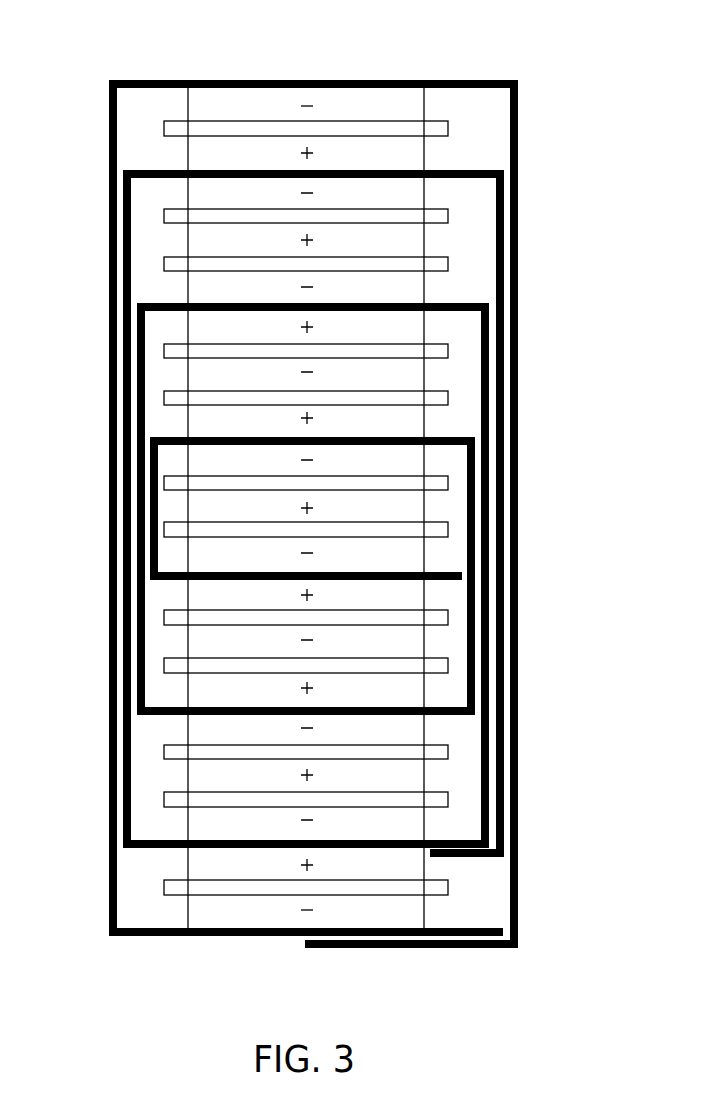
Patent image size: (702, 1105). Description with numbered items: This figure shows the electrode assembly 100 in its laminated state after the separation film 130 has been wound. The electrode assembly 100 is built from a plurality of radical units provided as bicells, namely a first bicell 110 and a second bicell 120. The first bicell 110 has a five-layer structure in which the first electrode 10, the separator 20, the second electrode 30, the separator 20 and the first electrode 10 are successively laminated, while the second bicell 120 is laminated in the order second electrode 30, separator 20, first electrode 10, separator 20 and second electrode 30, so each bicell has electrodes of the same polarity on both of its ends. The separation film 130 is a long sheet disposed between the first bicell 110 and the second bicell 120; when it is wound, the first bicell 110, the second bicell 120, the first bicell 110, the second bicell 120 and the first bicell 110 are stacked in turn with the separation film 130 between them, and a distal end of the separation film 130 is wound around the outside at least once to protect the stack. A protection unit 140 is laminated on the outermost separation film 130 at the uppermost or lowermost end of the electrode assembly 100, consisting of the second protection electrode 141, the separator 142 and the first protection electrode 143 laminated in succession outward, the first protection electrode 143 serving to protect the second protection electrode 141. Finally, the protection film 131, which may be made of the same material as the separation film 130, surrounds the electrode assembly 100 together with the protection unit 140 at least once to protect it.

The electrode assembly 100 is at (96, 62).
The first electrode 10 is at (196, 373).
The separator 20 is at (168, 350).
The second electrode 30 is at (198, 329).
The first bicell 110 is at (440, 237).
The second bicell 120 is at (440, 374).
The separation film 130 is at (140, 647).
The protection film 131 is at (313, 80).
The protection unit 140 is at (440, 107).
The second protection electrode 141 is at (195, 150).
The separator 142 is at (170, 131).
The first protection electrode 143 is at (176, 106).